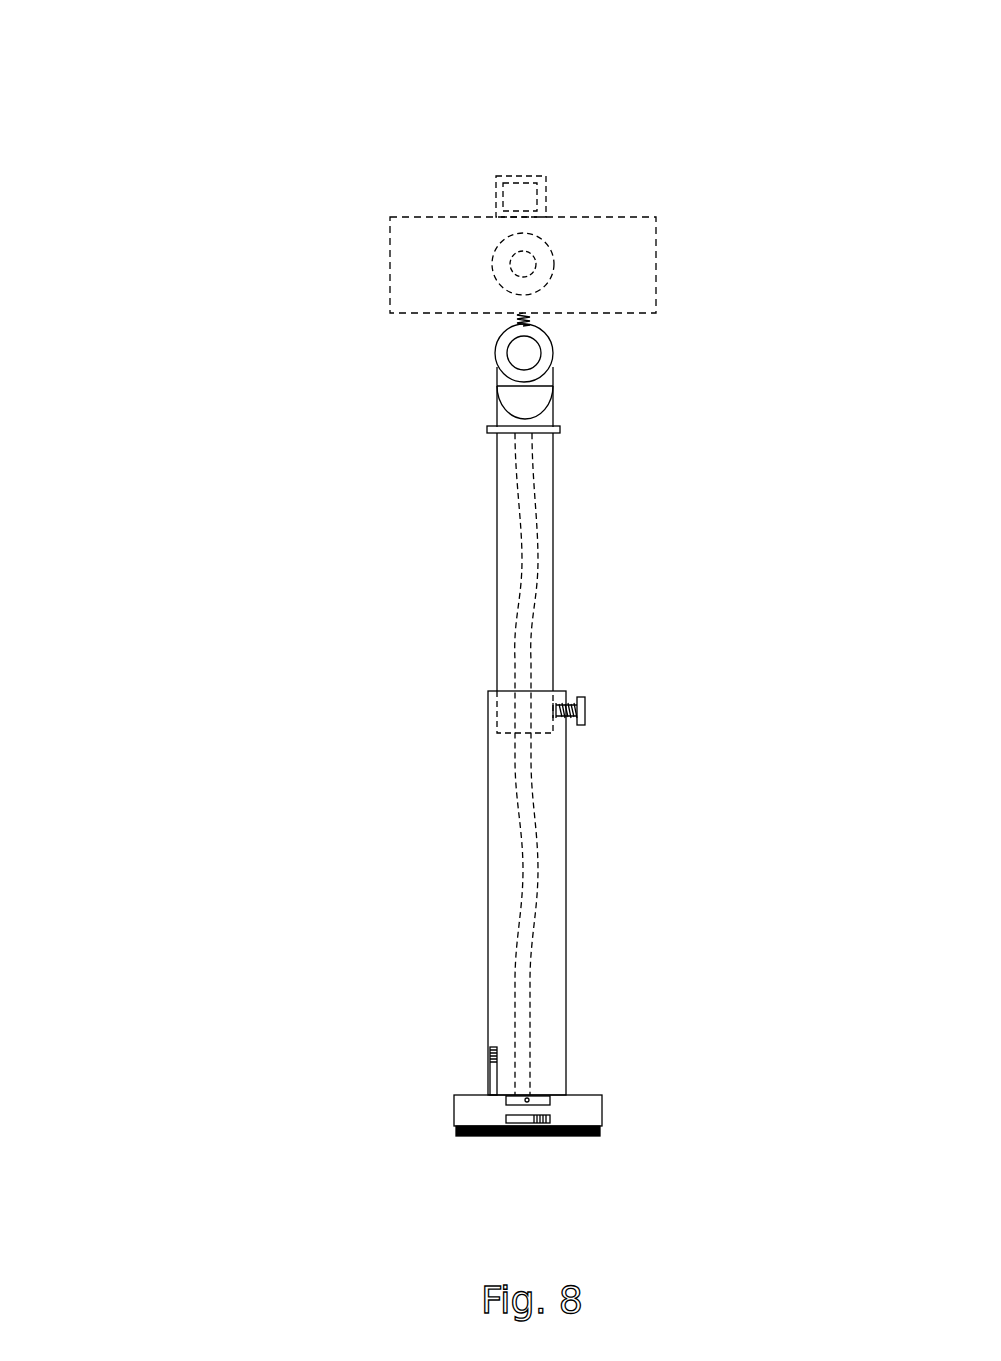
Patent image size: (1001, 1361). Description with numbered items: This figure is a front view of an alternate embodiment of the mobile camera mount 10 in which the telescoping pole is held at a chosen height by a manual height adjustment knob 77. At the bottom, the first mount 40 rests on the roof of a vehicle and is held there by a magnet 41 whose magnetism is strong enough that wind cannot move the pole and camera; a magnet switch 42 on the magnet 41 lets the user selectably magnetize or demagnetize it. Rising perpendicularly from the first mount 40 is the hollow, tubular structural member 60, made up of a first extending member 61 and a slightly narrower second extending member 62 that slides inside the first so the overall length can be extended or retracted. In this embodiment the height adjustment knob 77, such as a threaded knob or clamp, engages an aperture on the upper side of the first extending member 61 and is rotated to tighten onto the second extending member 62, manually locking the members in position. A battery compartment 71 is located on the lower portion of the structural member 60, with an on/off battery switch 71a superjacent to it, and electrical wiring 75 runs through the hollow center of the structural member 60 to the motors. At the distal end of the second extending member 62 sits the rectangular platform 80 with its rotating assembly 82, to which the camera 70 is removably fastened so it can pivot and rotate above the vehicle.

The mobile camera mount 10 is at (130, 116).
The first mount 40 is at (463, 1100).
The magnet 41 is at (602, 1133).
The magnet switch 42 is at (550, 1117).
The structural member 60 is at (460, 836).
The first extending member 61 is at (565, 792).
The second extending member 62 is at (553, 567).
The camera 70 is at (541, 203).
The battery compartment 71 is at (543, 1098).
The on/off battery switch 71a is at (492, 1050).
The electrical wiring 75 is at (535, 487).
The height adjustment knob 77 is at (582, 713).
The platform 80 is at (555, 427).
The rotating assembly 82 is at (478, 358).